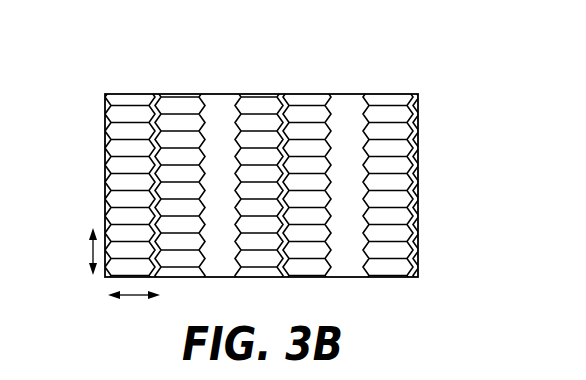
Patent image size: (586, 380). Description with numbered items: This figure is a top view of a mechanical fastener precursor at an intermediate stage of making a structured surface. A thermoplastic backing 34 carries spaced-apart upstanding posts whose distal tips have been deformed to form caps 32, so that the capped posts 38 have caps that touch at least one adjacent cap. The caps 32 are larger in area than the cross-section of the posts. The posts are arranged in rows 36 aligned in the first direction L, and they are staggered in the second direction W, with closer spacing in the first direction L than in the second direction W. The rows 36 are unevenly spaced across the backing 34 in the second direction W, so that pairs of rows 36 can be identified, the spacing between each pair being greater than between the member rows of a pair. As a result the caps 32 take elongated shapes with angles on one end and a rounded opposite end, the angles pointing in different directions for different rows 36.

The caps 32 is at (109, 147).
The thermoplastic backing 34 is at (420, 227).
The rows 36 is at (303, 84).
The capped posts 38 is at (428, 256).
The first direction L is at (91, 252).
The second direction W is at (133, 299).